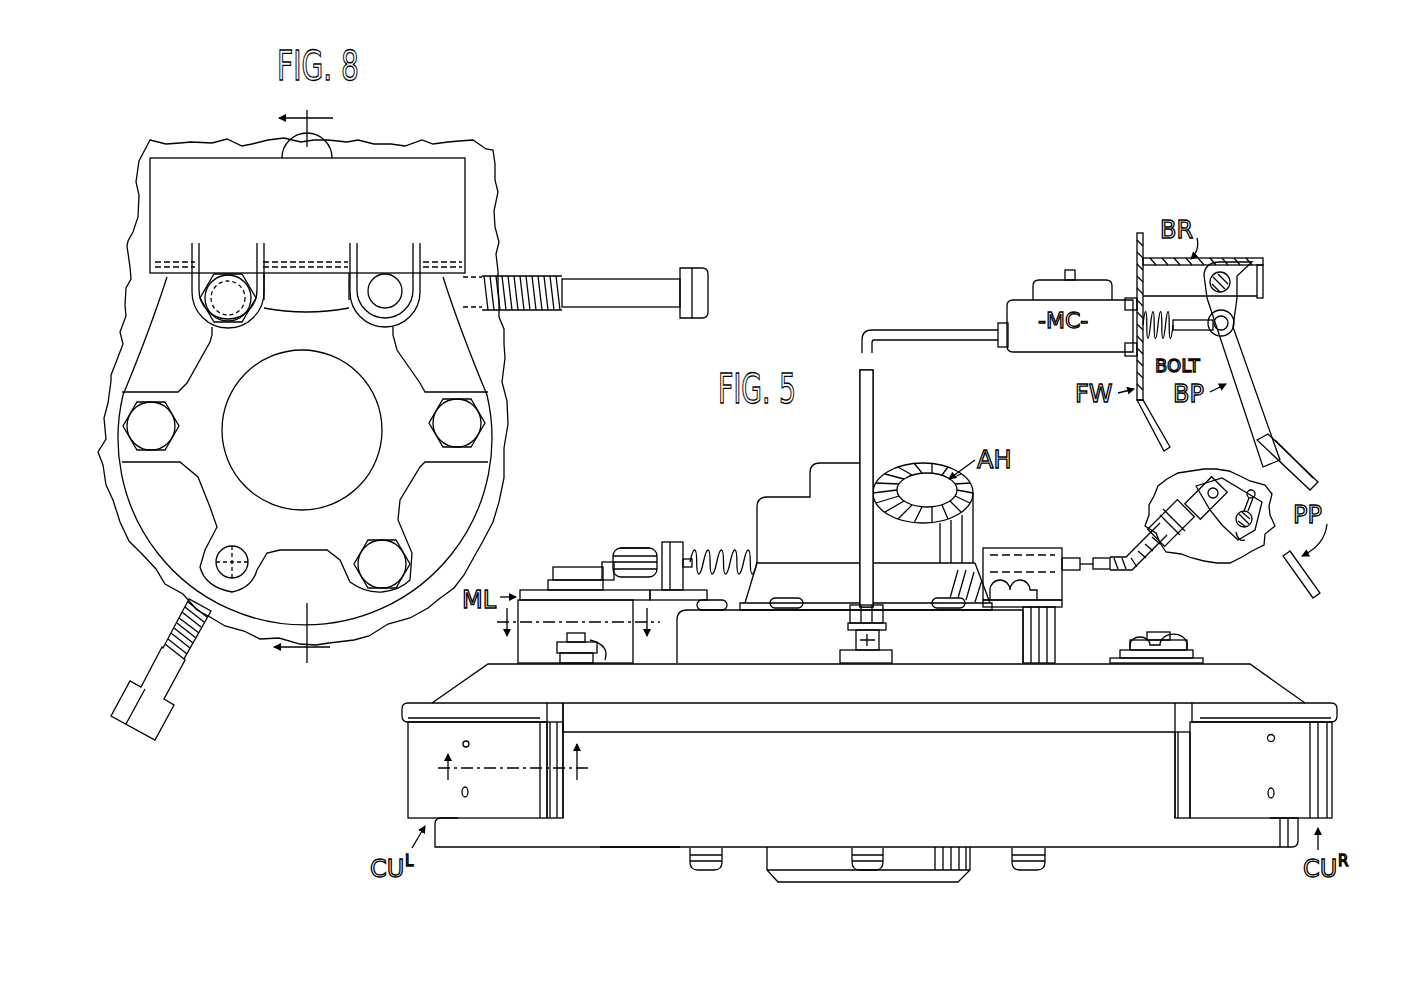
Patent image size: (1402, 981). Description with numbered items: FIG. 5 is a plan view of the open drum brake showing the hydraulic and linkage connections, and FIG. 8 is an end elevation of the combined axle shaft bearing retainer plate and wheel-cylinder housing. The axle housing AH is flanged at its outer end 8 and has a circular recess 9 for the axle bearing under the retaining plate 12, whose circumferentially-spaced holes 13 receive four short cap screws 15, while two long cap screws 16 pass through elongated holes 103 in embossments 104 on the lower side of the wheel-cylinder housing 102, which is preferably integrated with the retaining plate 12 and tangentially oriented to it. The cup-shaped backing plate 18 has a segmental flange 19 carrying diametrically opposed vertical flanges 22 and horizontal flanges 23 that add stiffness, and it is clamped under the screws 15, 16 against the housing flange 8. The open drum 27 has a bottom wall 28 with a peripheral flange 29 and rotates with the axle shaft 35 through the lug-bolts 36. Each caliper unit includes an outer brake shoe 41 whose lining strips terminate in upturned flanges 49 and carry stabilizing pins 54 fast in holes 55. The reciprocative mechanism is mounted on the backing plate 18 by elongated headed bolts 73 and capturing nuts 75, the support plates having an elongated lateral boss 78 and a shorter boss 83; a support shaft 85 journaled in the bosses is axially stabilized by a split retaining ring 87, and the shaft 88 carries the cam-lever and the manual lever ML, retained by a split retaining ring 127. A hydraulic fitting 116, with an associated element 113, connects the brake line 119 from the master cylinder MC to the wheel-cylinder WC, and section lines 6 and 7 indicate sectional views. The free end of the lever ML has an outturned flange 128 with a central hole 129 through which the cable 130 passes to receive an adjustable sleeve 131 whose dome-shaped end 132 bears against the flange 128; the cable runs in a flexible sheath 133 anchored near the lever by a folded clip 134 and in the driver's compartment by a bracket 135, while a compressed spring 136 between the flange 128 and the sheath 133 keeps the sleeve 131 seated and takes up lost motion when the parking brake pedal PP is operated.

In FIG. 5, the section line 6 is at (524, 754).
In FIG. 5, the section line 7 is at (578, 637).
In FIG. 5, the flanged outer end 8 is at (1056, 626).
In FIG. 8, the circular recess 9 is at (290, 384).
In FIG. 8, the retaining plate 12 is at (470, 368).
In FIG. 8, the holes 13 is at (220, 568).
In FIG. 8, the short screws 15 is at (150, 437).
In FIG. 5, the short screws 15 is at (719, 612).
In FIG. 8, the long screws 16 is at (230, 292).
In FIG. 5, the long screws 16 is at (805, 608).
In FIG. 8, the backing plate 18 is at (498, 171).
In FIG. 5, the backing plate 18 is at (868, 683).
In FIG. 5, the segmental flange 19 is at (787, 737).
In FIG. 5, the vertical flanges 22 is at (415, 703).
In FIG. 5, the horizontal flanges 23 is at (985, 722).
In FIG. 5, the open drum 27 is at (866, 816).
In FIG. 5, the bottom wall 28 is at (658, 848).
In FIG. 5, the peripheral flange 29 is at (620, 823).
In FIG. 5, the axle shaft 35 is at (802, 865).
In FIG. 5, the lug-bolts 36 is at (722, 863).
In FIG. 5, the outer brake pad 41 is at (405, 765).
In FIG. 5, the upturned flanges 49 is at (558, 796).
In FIG. 5, the stabilizing pins 54 is at (472, 745).
In FIG. 5, the holes 55 is at (465, 800).
In FIG. 5, the headed bolts 73 is at (592, 662).
In FIG. 5, the capturing nuts 75 is at (568, 656).
In FIG. 5, the lateral boss 78 is at (527, 658).
In FIG. 5, the lateral boss 83 is at (1205, 660).
In FIG. 5, the support shaft 85 is at (1185, 640).
In FIG. 5, the retaining ring 87 is at (1195, 652).
In FIG. 5, the shaft 88 is at (560, 567).
In FIG. 8, the wheel-cylinder housing 102 is at (400, 165).
In FIG. 8, the elongated holes 103 is at (383, 284).
In FIG. 8, the embossments 104 is at (353, 312).
In FIG. 5, the base fitting 113 is at (852, 657).
In FIG. 5, the hydraulic fitting 116 is at (895, 624).
In FIG. 5, the brake line 119 is at (863, 368).
In FIG. 5, the retaining ring 127 is at (550, 583).
In FIG. 5, the outturned flange 128 is at (668, 542).
In FIG. 5, the central hole 129 is at (690, 558).
In FIG. 5, the cable 130 is at (757, 562).
In FIG. 5, the adjustable sleeve 131 is at (613, 560).
In FIG. 5, the dome-shaped end 132 is at (640, 548).
In FIG. 5, the flexible sheath 133 is at (987, 548).
In FIG. 5, the folded bracket 134 is at (1050, 588).
In FIG. 5, the bracket 135 is at (1194, 550).
In FIG. 5, the compressed spring 136 is at (746, 550).